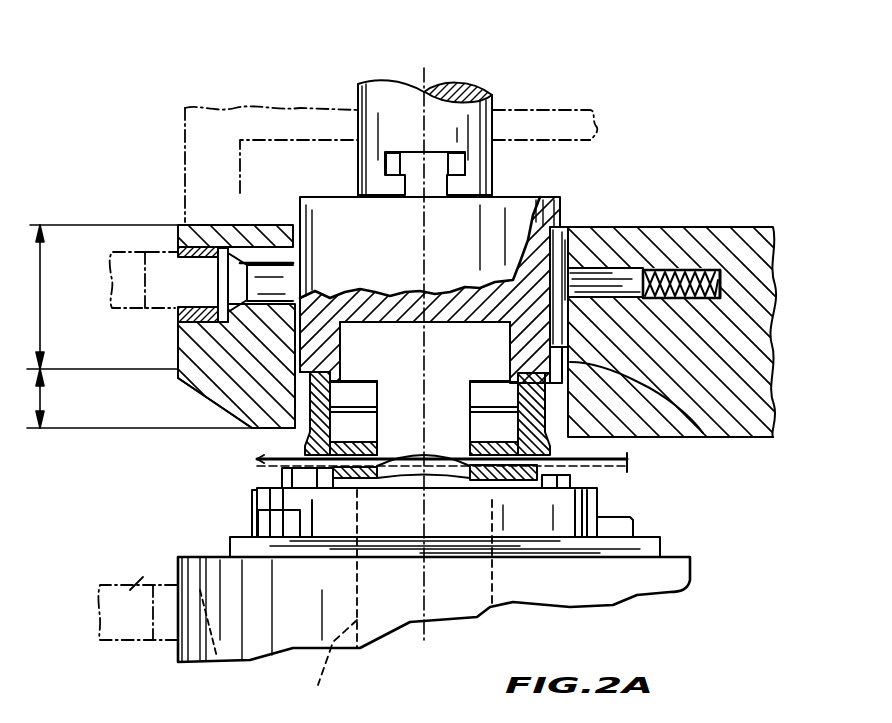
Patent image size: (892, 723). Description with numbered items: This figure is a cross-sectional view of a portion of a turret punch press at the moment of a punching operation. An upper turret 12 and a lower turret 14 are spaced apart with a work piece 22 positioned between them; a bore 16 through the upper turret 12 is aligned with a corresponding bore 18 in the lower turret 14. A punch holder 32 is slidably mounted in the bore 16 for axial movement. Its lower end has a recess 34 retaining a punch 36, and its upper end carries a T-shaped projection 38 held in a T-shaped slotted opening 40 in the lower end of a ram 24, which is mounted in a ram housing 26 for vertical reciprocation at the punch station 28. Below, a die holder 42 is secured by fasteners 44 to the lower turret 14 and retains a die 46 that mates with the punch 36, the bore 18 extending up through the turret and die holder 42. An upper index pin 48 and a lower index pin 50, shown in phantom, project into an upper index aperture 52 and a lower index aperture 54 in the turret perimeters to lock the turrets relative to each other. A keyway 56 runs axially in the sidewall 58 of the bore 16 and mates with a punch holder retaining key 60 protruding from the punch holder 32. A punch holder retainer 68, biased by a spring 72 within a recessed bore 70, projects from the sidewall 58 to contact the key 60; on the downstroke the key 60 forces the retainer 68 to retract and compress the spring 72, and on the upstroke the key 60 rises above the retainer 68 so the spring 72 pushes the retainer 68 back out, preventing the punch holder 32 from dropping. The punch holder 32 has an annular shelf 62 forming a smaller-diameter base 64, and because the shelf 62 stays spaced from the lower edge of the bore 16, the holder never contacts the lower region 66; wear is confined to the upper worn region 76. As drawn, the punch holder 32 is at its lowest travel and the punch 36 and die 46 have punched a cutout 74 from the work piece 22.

The upper turret 12 is at (792, 437).
The lower turret 14 is at (178, 662).
The bore 16 is at (330, 297).
The bore 18 is at (331, 671).
The work piece 22 is at (627, 463).
The ram 24 is at (470, 83).
The ram housing 26 is at (185, 120).
The punch station 28 is at (428, 53).
The punch holder 32 is at (340, 221).
The recess 34 is at (500, 397).
The punch 36 is at (418, 410).
The T-shaped projection 38 is at (450, 161).
The T-shaped slotted opening 40 is at (390, 155).
The die holder 42 is at (251, 500).
The fasteners 44 is at (262, 524).
The die 46 is at (352, 488).
The upper index pin 48 is at (163, 311).
The lower index pin 50 is at (150, 574).
The upper index aperture 52 is at (257, 250).
The lower index aperture 54 is at (215, 663).
The keyway 56 is at (713, 437).
The sidewall 58 is at (343, 373).
The punch holder retaining key 60 is at (568, 228).
The annular shelf 62 is at (300, 354).
The base 64 is at (517, 374).
The lower region 66 is at (47, 397).
The punch holder retainer 68 is at (617, 267).
The recessed bore 70 is at (702, 270).
The spring 72 is at (727, 290).
The cutout 74 is at (443, 488).
The upper worn region 76 is at (43, 281).